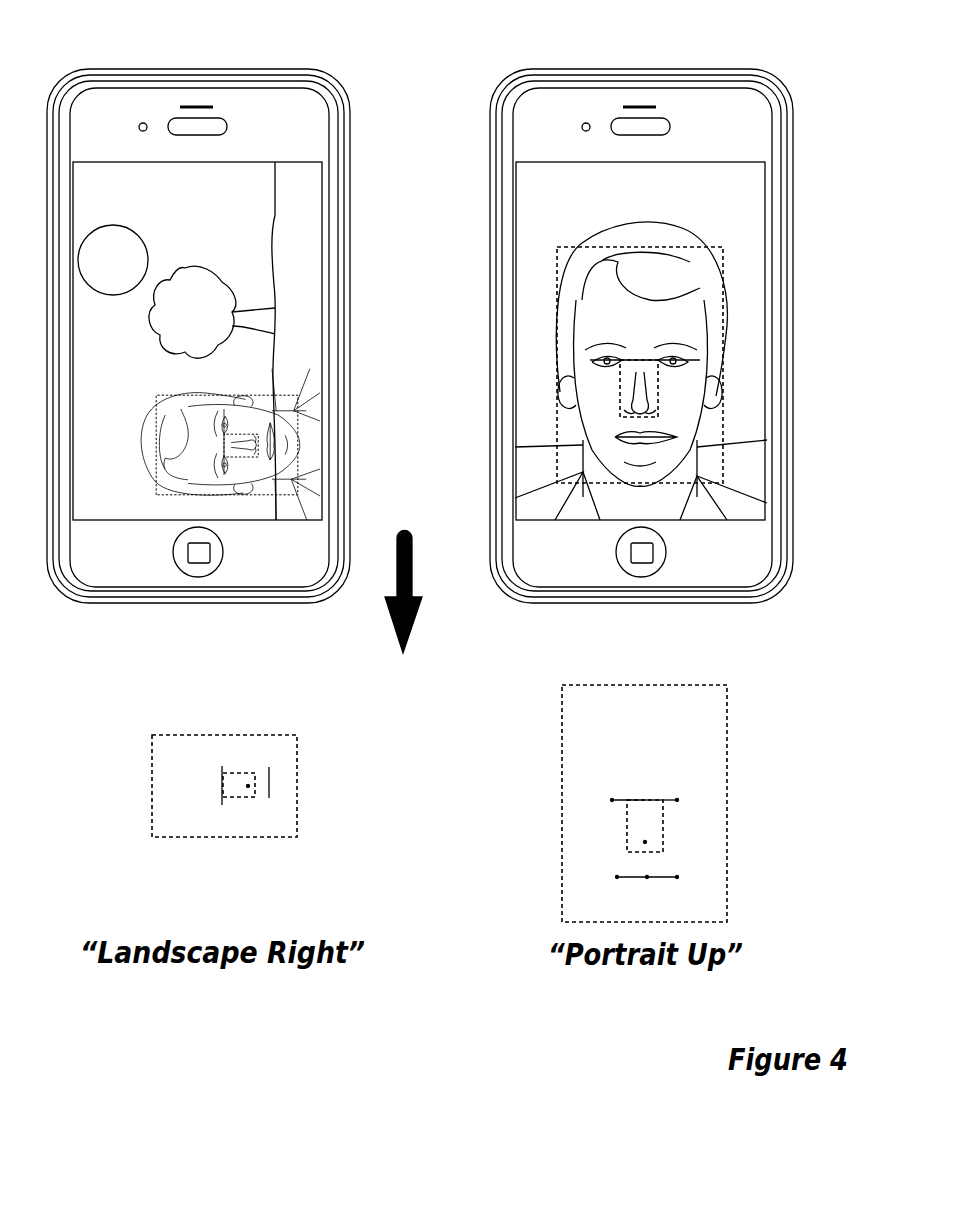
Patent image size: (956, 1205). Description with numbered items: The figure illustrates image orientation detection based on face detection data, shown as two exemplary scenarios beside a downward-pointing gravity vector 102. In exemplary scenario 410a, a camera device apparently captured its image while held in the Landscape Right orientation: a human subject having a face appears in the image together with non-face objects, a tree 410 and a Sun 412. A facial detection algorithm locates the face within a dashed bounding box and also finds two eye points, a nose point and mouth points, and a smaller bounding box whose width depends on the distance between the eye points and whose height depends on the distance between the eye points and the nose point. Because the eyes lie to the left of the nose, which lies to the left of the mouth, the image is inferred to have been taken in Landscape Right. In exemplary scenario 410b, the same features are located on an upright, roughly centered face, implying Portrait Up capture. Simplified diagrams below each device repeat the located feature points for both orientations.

The gravity vector 102 is at (409, 516).
The exemplary scenario 410a is at (272, 52).
The exemplary scenario 410b is at (712, 50).
The Sun 412 is at (150, 255).
The tree 410 is at (138, 323).